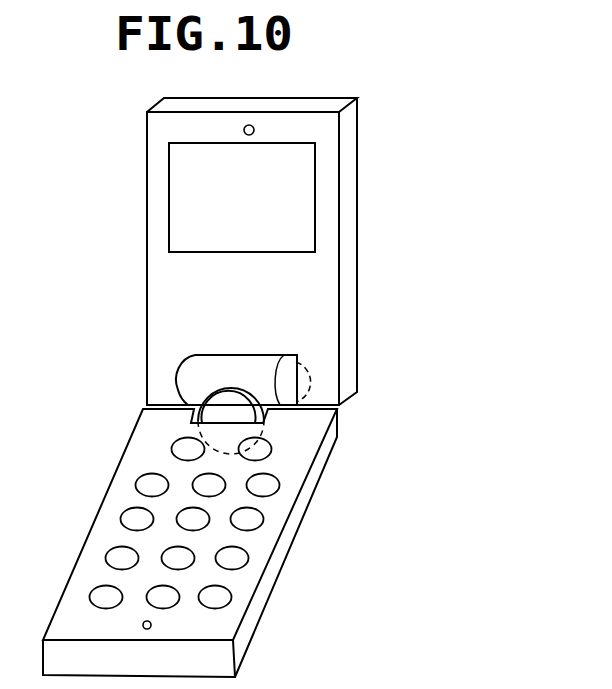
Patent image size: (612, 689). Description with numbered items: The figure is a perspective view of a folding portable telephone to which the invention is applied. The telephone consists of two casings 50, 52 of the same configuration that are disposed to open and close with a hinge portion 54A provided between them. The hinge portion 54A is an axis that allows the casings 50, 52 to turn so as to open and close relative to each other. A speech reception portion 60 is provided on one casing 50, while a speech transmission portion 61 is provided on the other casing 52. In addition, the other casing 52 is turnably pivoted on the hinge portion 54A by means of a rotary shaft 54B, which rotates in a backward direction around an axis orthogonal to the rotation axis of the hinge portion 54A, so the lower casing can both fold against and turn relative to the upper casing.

The casing 50 is at (348, 233).
The casing 52 is at (123, 498).
The hinge portion 54A is at (285, 390).
The rotary shaft 54B is at (242, 415).
The speech reception portion 60 is at (253, 126).
The speech transmission portion 61 is at (151, 622).